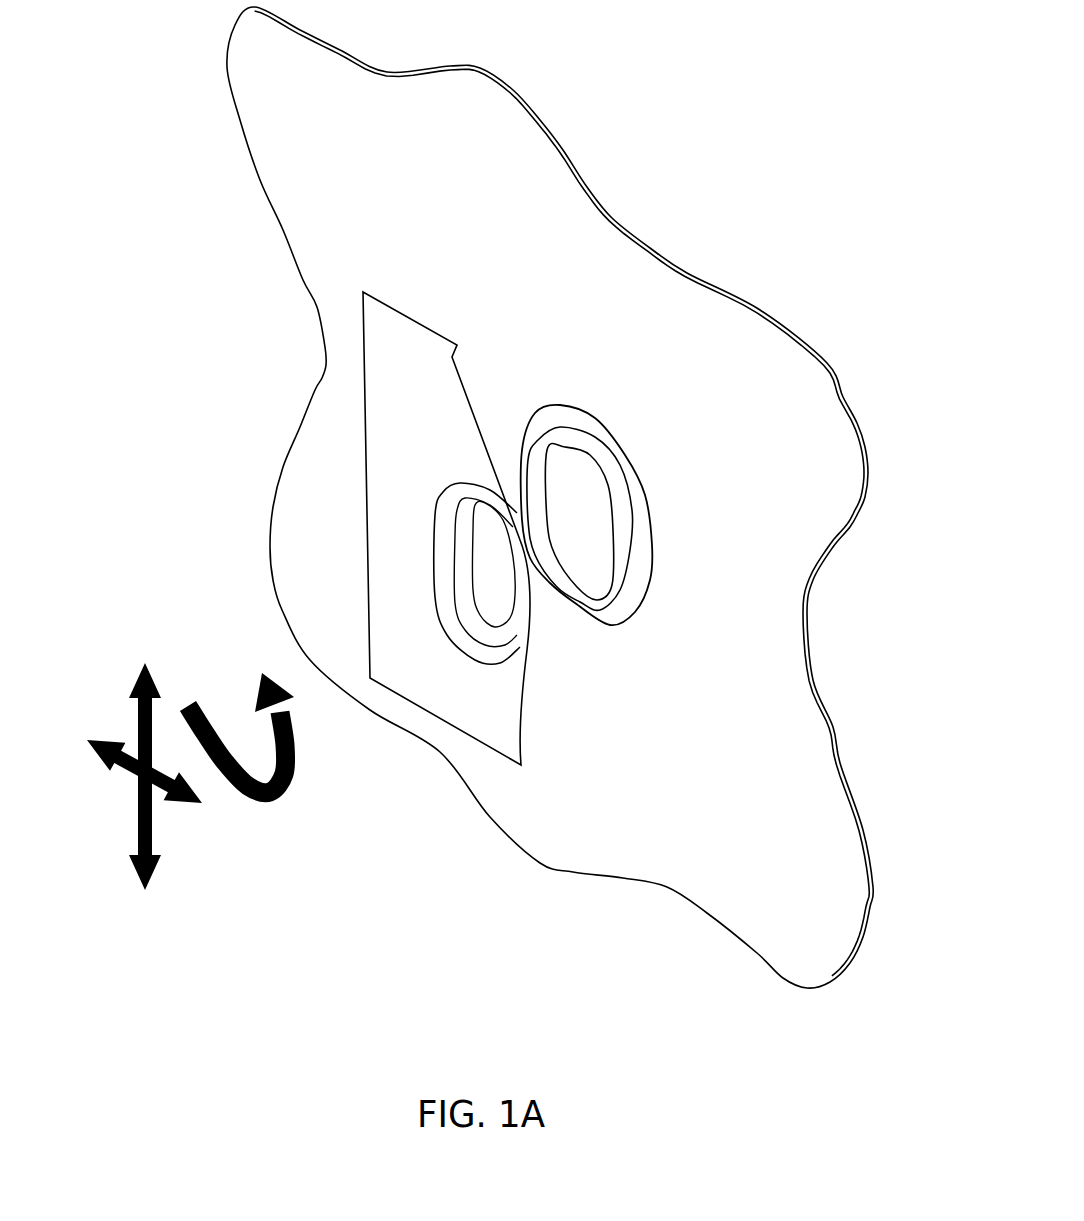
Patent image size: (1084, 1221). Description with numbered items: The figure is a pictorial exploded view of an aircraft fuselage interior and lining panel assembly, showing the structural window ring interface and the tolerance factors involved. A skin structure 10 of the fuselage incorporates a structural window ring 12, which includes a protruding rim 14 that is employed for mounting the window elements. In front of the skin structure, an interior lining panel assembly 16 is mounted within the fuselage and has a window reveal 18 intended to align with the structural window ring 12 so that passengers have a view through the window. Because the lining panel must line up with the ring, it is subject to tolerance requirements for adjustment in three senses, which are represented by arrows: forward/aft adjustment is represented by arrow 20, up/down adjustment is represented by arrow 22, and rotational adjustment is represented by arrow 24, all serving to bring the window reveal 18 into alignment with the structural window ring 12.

The skin structure 10 is at (777, 388).
The structural window ring 12 is at (646, 538).
The protruding rim 14 is at (623, 568).
The interior lining panel assembly 16 is at (420, 422).
The window reveal 18 is at (443, 580).
The arrow 20 is at (203, 807).
The arrow 22 is at (138, 873).
The arrow 24 is at (280, 788).